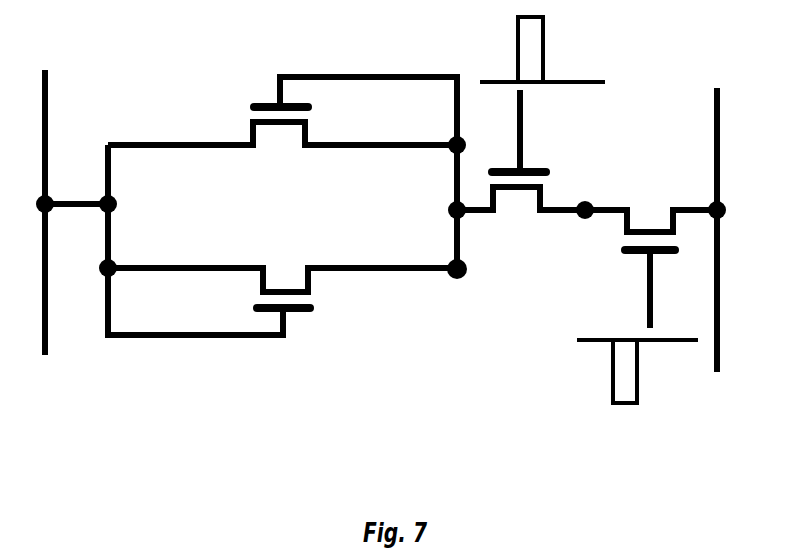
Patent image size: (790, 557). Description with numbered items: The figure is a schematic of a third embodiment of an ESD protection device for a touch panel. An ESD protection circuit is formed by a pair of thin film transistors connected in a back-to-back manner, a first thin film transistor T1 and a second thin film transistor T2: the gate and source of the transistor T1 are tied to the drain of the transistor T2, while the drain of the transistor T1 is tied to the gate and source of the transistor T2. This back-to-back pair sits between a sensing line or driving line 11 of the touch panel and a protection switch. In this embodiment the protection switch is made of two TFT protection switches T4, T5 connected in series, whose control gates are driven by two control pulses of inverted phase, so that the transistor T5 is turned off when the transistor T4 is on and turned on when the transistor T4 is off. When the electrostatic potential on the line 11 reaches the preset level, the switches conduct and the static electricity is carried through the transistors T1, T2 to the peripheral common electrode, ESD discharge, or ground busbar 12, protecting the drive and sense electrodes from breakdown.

The sensing line or driving line 11 is at (44, 188).
The ground busbar 12 is at (729, 204).
The first thin film transistor T1 is at (284, 112).
The second thin film transistor T2 is at (284, 311).
The TFT protection switch T4 is at (542, 132).
The TFT protection switch T5 is at (648, 293).